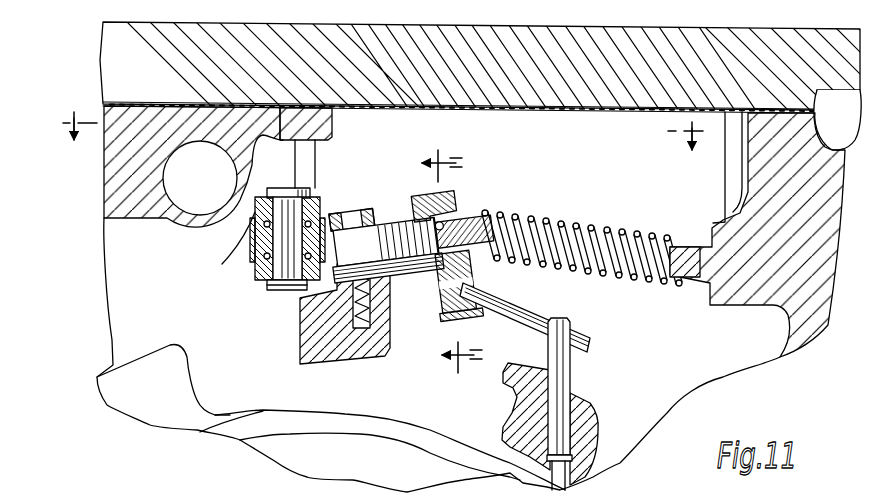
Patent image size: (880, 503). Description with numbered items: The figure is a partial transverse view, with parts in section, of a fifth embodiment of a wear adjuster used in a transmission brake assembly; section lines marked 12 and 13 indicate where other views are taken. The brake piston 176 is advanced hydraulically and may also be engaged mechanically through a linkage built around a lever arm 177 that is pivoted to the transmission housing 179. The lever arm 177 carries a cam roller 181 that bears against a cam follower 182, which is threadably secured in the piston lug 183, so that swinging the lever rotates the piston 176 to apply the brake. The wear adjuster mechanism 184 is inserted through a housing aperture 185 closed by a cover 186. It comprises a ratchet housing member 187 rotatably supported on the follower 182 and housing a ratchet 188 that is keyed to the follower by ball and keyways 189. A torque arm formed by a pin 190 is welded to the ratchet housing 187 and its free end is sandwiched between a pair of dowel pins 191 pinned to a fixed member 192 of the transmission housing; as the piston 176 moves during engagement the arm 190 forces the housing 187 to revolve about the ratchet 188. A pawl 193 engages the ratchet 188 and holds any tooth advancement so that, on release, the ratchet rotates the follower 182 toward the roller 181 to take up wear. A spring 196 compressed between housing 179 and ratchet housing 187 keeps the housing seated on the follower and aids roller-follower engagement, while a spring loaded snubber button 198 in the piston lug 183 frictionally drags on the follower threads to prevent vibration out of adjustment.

The piston 176 is at (420, 430).
The lever arm 177 is at (250, 222).
The transmission housing 179 is at (333, 128).
The cam roller 181 is at (245, 256).
The cam follower 182 is at (322, 291).
The piston lug 183 is at (300, 333).
The wear adjuster mechanism 184 is at (426, 249).
The housing aperture 185 is at (747, 192).
The cover 186 is at (627, 102).
The ratchet housing member 187 is at (460, 196).
The ratchet 188 is at (443, 265).
The ball and keyways 189 is at (463, 217).
The pin (torque arm) 190 is at (532, 317).
The dowel pins 191 is at (571, 366).
The fixed member 192 is at (588, 416).
The pawl 193 is at (475, 297).
The spring 196 is at (563, 223).
The spring loaded snubber button 198 is at (345, 272).
The section line 12 is at (383, 144).
The section line 13 is at (434, 261).